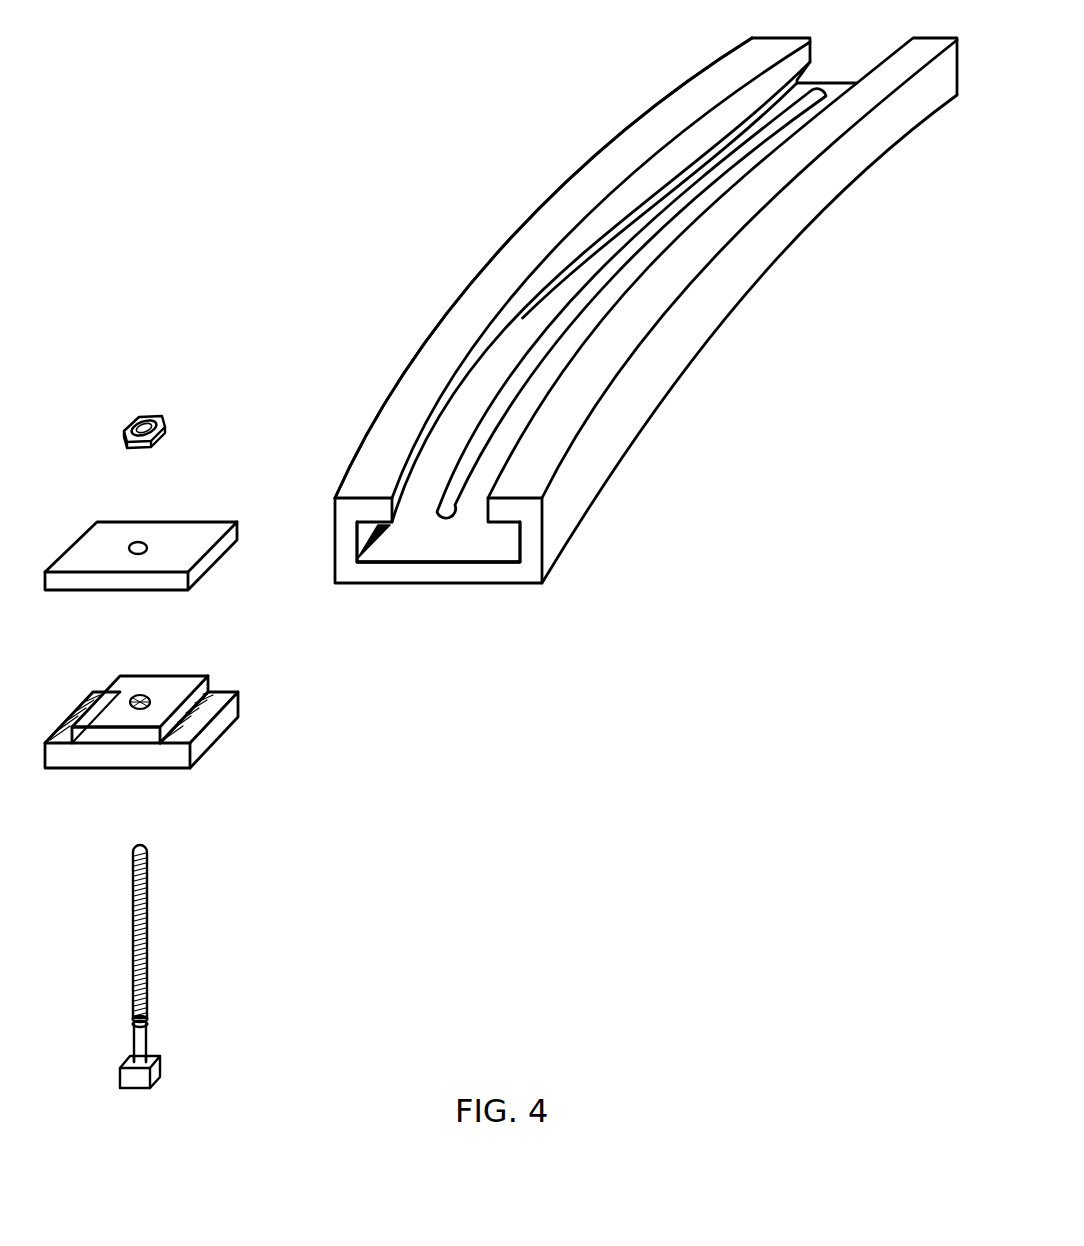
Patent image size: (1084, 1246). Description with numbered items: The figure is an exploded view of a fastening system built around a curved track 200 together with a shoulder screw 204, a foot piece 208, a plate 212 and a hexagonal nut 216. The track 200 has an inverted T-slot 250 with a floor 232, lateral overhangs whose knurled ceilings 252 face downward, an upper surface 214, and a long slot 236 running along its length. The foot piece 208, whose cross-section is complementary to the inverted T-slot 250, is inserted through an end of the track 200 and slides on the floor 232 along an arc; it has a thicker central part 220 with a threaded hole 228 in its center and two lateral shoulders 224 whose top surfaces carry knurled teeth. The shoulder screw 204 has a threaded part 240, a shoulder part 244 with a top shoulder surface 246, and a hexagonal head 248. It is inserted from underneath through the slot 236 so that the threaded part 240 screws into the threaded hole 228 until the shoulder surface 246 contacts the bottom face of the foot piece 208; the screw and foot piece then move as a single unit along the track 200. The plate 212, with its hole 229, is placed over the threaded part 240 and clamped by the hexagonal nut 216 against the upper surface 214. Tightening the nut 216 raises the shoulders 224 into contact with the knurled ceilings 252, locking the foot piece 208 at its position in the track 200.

The track 200 is at (656, 410).
The shoulder screw 204 is at (150, 862).
The foot piece 208 is at (110, 770).
The plate 212 is at (198, 522).
The upper surface of the track 214 is at (497, 283).
The hexagonal nut 216 is at (167, 423).
The central part 220 is at (185, 675).
The lateral shoulders 224 is at (232, 710).
The threaded hole 228 is at (145, 697).
The hole 229 is at (145, 543).
The floor of the track 232 is at (505, 551).
The slot 236 is at (486, 408).
The threaded part 240 is at (128, 936).
The shoulder part 244 is at (148, 1030).
The shoulder surface 246 is at (148, 1012).
The hexagonal head 248 is at (158, 1068).
The inverted T-slot 250 is at (455, 562).
The ceilings 252 is at (378, 525).